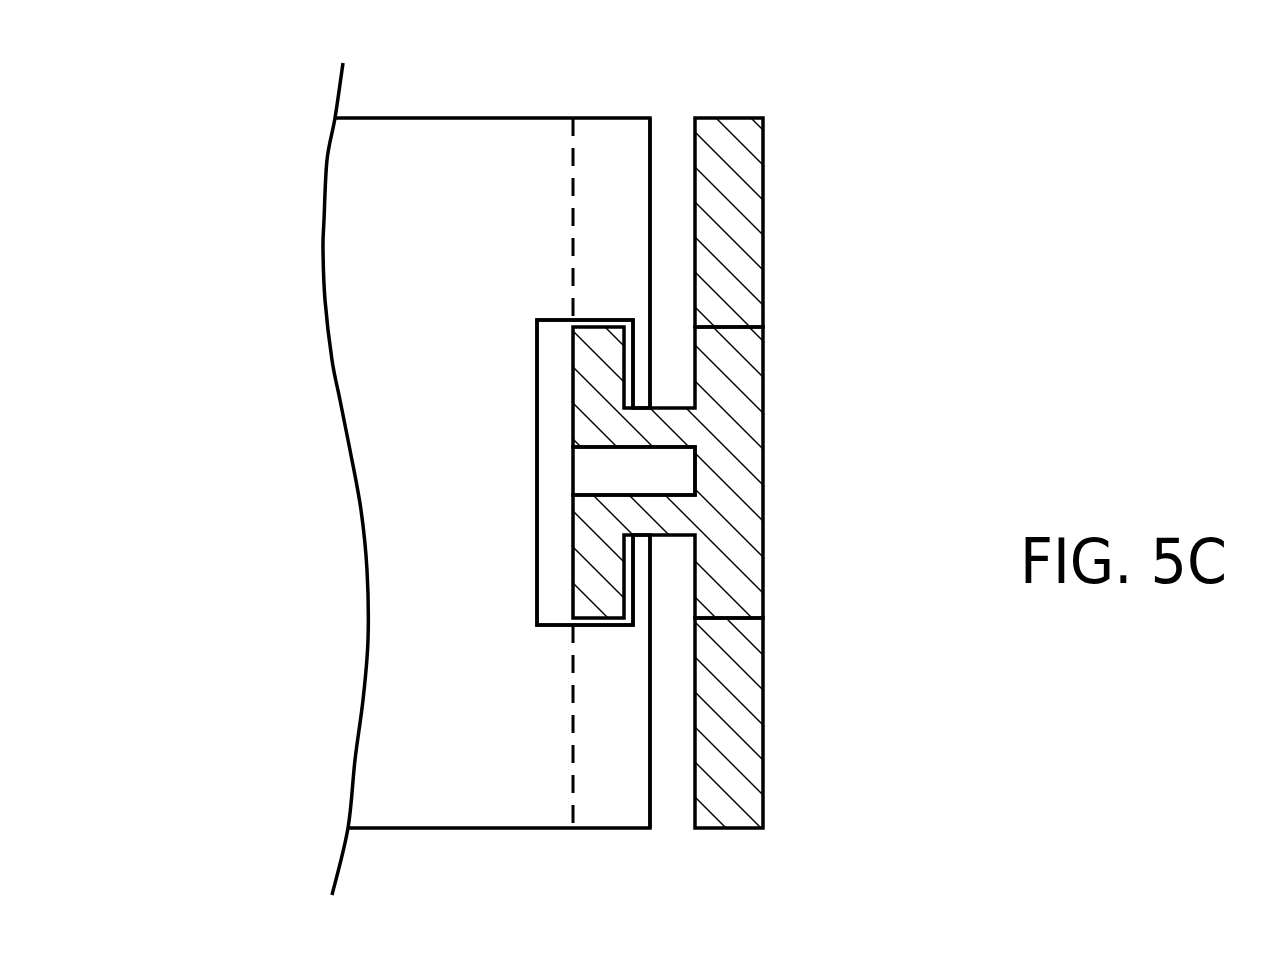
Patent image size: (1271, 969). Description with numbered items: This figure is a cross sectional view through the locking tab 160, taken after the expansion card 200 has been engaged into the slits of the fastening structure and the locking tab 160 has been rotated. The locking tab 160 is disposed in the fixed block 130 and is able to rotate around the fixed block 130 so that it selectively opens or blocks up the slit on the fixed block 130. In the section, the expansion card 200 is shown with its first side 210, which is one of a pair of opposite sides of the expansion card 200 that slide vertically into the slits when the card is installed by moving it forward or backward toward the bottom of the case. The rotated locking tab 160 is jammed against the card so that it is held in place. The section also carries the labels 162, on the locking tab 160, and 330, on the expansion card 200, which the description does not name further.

The fixed block 130 is at (728, 128).
The locking tab 160 is at (747, 415).
The slot of coupling member 162 is at (683, 472).
The expansion card 200 is at (401, 133).
The first side 210 is at (610, 133).
The coupling groove 330 is at (573, 472).